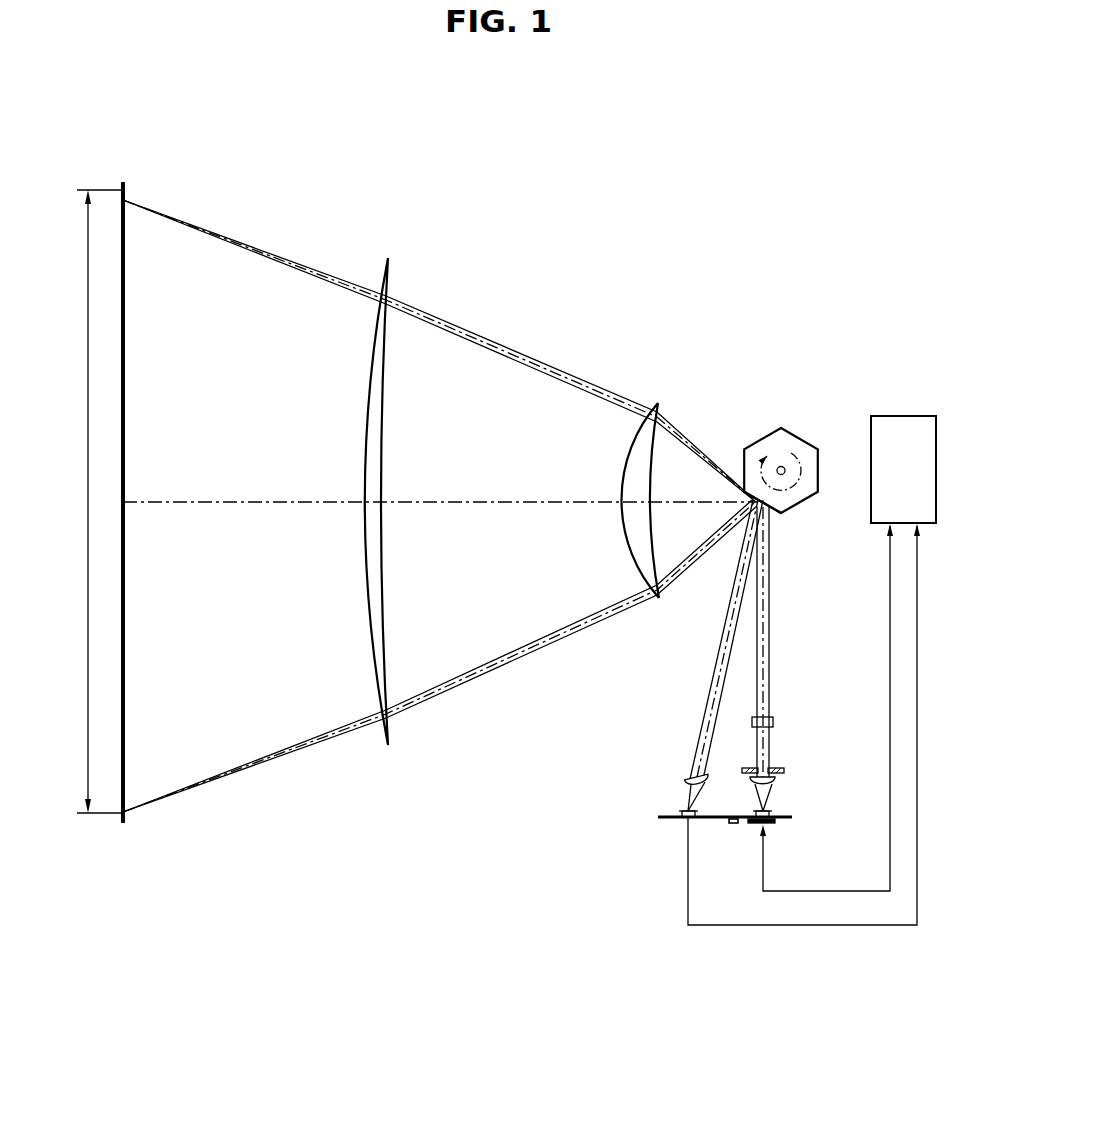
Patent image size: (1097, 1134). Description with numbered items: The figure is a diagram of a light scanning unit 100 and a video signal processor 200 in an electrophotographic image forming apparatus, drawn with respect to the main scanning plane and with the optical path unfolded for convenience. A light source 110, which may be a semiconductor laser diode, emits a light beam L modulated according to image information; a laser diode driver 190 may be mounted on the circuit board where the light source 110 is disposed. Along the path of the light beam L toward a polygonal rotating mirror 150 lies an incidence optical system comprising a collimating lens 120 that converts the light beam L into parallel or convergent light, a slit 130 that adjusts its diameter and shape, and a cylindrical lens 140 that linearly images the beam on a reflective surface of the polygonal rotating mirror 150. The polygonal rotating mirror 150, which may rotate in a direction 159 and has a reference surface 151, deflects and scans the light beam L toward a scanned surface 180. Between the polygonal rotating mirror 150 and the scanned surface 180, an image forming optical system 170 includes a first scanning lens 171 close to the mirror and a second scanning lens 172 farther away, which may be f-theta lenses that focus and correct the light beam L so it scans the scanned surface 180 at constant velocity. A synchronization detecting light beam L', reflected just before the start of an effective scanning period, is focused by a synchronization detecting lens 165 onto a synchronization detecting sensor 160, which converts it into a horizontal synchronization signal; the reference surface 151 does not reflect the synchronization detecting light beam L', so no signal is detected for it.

The light scanning unit 100 is at (853, 148).
The light source 110 is at (770, 814).
The collimating lens 120 is at (776, 780).
The slit 130 is at (785, 769).
The cylindrical lens 140 is at (775, 722).
The polygonal rotating mirror 150 is at (798, 428).
The reference surface 151 is at (773, 514).
The rotation direction 159 is at (797, 491).
The synchronization detecting sensor 160 is at (680, 813).
The synchronization detecting lens 165 is at (688, 776).
The image forming optical system 170 is at (714, 322).
The first scanning lens 171 is at (661, 406).
The second scanning lens 172 is at (388, 281).
The scanned surface 180 is at (125, 221).
The laser diode driver 190 is at (776, 824).
The video signal processor 200 is at (905, 414).
The light beam L is at (796, 659).
The synchronization detecting light beam L' is at (713, 655).